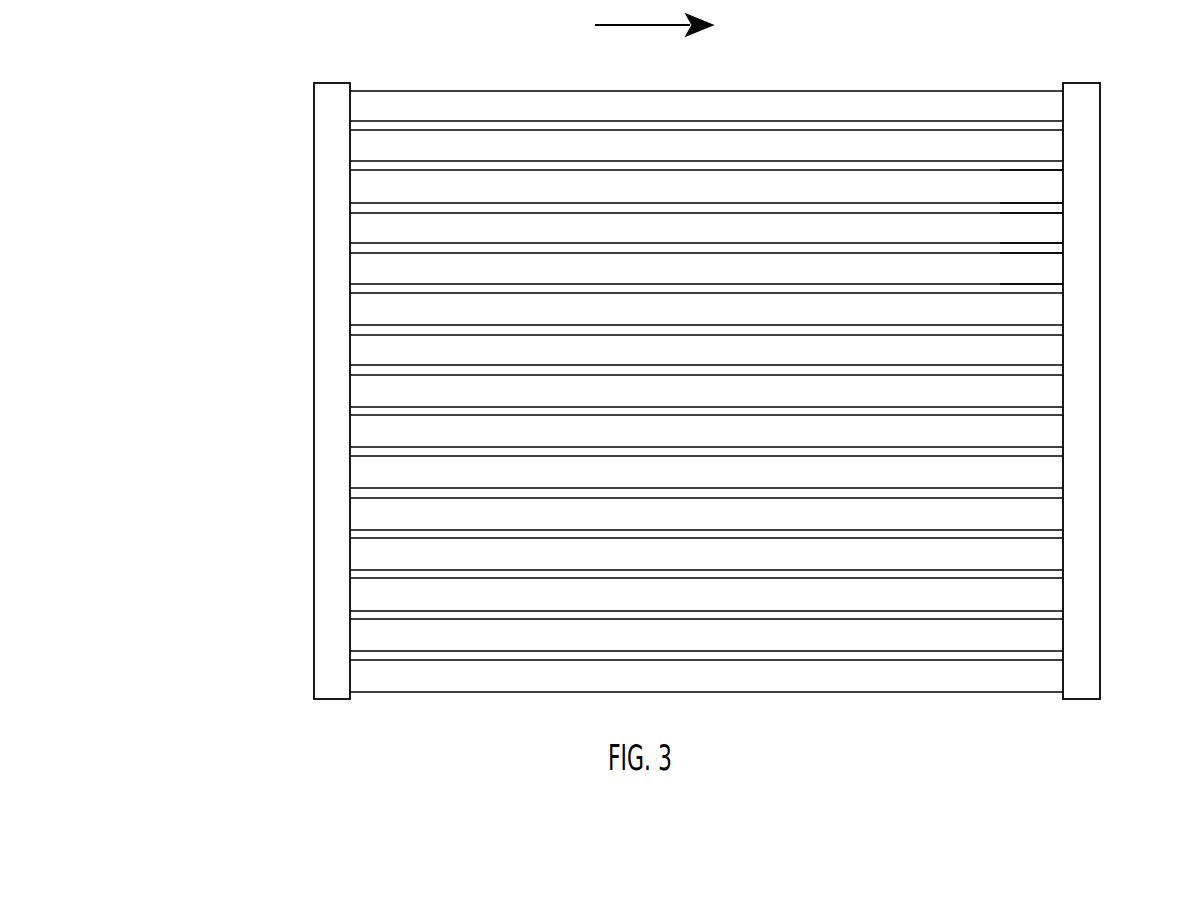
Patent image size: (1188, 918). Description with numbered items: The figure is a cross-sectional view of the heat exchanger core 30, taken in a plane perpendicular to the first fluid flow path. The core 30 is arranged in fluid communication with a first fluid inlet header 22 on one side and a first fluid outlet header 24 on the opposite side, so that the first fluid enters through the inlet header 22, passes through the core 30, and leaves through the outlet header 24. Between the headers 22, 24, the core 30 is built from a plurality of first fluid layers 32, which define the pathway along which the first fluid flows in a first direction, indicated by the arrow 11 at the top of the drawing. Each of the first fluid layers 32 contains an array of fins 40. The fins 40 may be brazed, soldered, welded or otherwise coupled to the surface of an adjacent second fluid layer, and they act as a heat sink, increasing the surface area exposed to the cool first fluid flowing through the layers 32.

The core 30 is at (675, 353).
The first fluid inlet header 22 is at (314, 367).
The first fluid outlet header 24 is at (1087, 498).
The first fluid layers 32 is at (922, 210).
The fins 40 is at (1035, 274).
The flow direction 11 is at (654, 18).